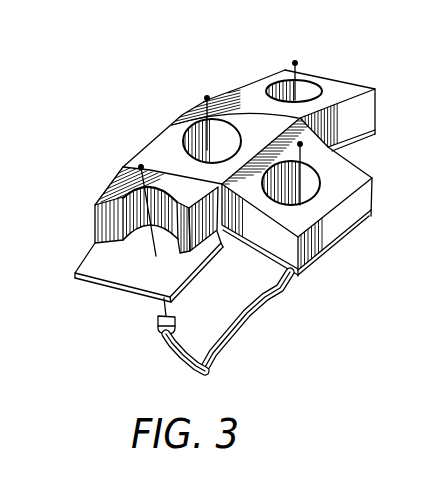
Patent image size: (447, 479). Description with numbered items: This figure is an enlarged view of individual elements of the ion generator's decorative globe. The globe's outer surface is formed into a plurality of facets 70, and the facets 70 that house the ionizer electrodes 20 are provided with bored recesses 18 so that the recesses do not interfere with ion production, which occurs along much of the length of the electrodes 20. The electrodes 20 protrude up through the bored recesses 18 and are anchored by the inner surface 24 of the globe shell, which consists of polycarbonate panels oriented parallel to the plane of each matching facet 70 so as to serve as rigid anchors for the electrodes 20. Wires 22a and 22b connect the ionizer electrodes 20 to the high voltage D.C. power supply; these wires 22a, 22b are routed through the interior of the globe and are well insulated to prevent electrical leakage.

The facets 70 is at (342, 88).
The bored recesses 18 is at (332, 166).
The ionizer electrodes 20 is at (206, 101).
The wire 22a is at (281, 288).
The wire 22b is at (180, 348).
The inner surface 24 is at (196, 279).